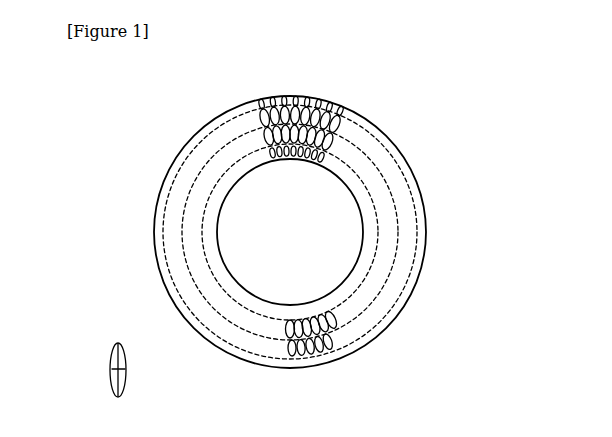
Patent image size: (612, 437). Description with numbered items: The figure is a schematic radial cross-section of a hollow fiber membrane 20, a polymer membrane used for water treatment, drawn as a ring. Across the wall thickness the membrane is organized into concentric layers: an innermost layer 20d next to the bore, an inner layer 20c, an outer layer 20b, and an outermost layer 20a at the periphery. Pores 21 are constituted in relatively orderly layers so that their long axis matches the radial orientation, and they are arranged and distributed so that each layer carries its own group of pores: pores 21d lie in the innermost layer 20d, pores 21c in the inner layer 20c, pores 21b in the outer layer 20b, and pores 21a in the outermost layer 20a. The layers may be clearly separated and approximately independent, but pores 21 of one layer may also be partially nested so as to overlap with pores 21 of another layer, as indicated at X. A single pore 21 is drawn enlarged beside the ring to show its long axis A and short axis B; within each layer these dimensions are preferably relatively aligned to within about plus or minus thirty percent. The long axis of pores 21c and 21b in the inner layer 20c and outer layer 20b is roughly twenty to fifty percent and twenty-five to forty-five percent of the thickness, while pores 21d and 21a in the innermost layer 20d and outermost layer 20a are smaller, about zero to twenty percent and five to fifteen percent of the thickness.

The hollow fiber membrane 20 is at (378, 127).
The outermost layer 20a is at (392, 152).
The outer layer 20b is at (392, 177).
The inner layer 20c is at (392, 225).
The innermost layer 20d is at (370, 255).
The pore 21 is at (127, 362).
The pores in outermost layer 21a is at (262, 103).
The pores in outer layer 21b is at (257, 115).
The pores in inner layer 21c is at (258, 142).
The pores in innermost layer 21d is at (265, 153).
The long axis A is at (116, 388).
The short axis B is at (124, 375).
The nested overlap region X is at (332, 372).